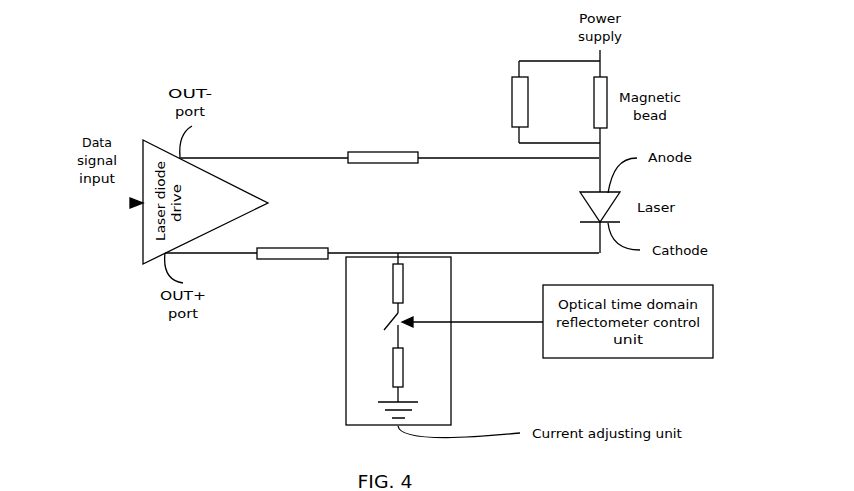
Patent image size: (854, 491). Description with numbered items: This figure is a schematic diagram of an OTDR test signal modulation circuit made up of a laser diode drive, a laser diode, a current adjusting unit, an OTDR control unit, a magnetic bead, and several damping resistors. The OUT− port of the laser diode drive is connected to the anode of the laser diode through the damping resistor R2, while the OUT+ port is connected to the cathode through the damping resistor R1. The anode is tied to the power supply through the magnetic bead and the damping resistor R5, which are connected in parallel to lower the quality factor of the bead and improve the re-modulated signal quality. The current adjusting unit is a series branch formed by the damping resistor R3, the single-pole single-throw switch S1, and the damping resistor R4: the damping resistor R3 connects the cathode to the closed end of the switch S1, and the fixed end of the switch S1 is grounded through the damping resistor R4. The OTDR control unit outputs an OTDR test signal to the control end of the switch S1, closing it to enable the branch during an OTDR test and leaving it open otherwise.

The damping resistor R1 is at (292, 242).
The damping resistor R2 is at (383, 146).
The damping resistor R3 is at (411, 283).
The damping resistor R4 is at (415, 367).
The damping resistor R5 is at (502, 102).
The single-pole single-throw switch S1 is at (377, 330).